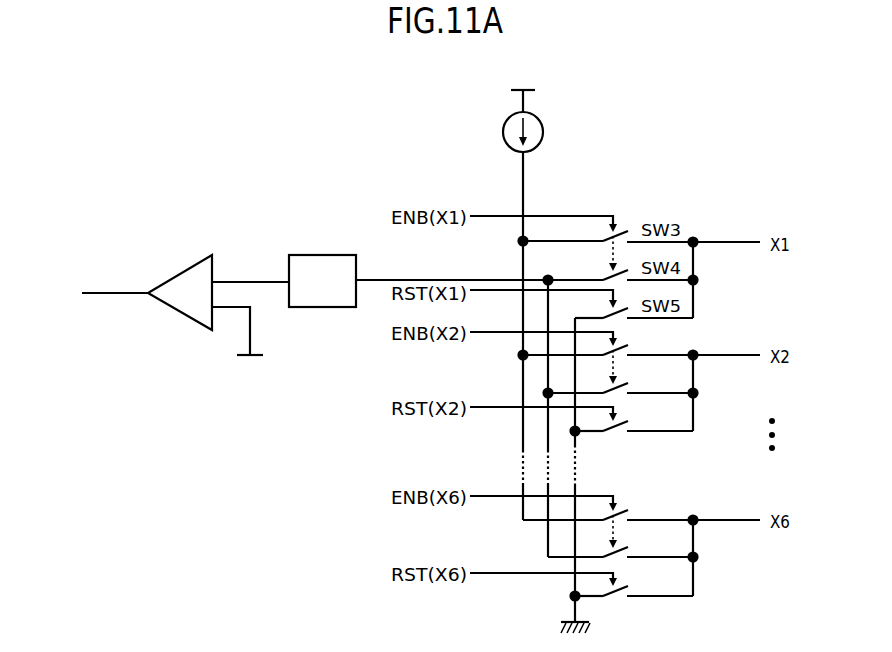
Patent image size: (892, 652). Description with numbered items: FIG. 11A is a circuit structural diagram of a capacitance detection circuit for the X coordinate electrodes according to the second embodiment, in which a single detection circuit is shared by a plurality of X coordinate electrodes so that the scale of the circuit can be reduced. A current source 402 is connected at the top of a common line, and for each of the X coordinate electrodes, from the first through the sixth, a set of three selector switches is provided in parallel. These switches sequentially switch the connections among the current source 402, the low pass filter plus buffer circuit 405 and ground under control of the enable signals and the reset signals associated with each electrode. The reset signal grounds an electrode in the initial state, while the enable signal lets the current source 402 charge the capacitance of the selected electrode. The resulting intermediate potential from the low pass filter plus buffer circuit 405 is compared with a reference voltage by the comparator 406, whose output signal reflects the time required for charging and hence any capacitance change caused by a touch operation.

The current source 402 is at (548, 128).
The low pass filter and buffer amplifier 405 is at (320, 251).
The comparator 406 is at (177, 318).